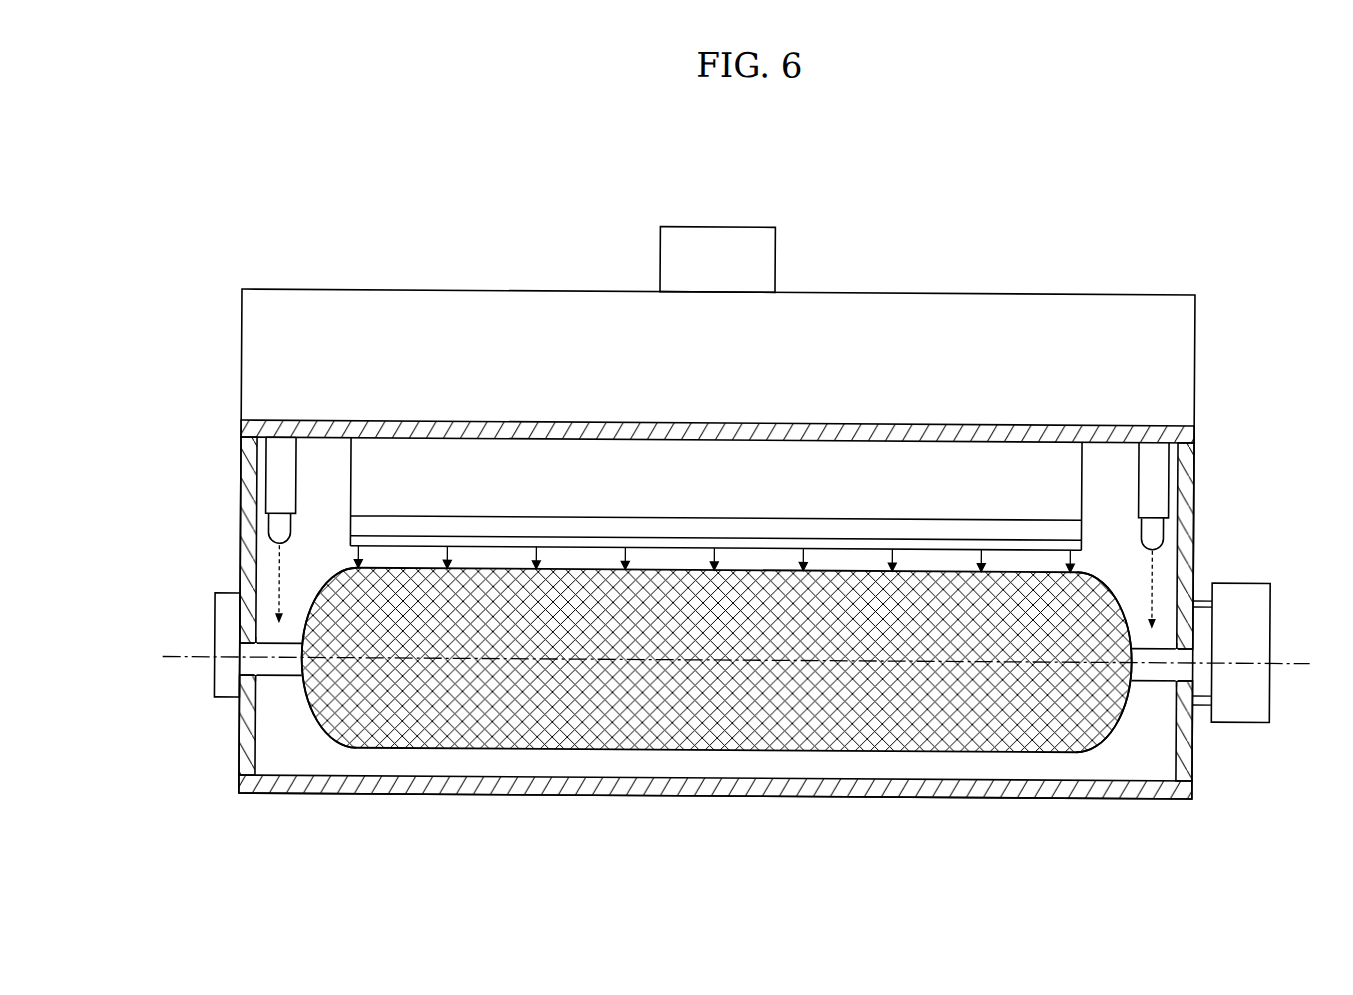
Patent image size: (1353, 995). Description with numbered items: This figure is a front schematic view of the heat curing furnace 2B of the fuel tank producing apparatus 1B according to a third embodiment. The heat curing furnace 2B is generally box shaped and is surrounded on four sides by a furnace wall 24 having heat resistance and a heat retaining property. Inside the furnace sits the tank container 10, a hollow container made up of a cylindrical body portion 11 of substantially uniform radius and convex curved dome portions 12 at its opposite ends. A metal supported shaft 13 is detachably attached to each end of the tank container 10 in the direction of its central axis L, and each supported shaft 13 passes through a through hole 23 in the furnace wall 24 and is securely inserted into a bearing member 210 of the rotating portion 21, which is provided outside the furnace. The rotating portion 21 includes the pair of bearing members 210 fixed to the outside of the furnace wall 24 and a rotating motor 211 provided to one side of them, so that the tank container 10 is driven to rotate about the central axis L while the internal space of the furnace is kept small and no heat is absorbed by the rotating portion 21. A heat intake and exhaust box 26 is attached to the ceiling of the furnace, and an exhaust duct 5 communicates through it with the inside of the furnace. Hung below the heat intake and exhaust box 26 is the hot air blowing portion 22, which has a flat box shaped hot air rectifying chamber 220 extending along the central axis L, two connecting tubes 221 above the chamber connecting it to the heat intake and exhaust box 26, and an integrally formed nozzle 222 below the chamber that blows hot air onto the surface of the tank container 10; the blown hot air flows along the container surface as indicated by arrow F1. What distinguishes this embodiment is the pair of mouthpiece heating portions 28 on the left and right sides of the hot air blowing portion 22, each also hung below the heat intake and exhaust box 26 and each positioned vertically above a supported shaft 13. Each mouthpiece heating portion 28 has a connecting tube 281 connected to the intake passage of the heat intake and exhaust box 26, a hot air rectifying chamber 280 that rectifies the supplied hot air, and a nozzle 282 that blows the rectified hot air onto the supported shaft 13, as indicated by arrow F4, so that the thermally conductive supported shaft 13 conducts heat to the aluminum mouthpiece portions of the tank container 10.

The fuel tank producing apparatus 1B is at (1214, 208).
The heat curing furnace 2B is at (1201, 347).
The exhaust duct 5 is at (733, 249).
The tank container 10 is at (921, 758).
The body portion 11 is at (725, 749).
The dome portion 12 is at (316, 714).
The supported shaft 13 is at (290, 668).
The rotating portion 21 is at (1279, 585).
The bearing member 210 is at (228, 610).
The rotating motor 211 is at (1258, 691).
The hot air blowing portion 22 is at (1093, 453).
The hot air rectifying chamber 220 is at (645, 484).
The connecting tube 221 is at (517, 418).
The nozzle 222 is at (425, 527).
The through hole 23 is at (265, 648).
The furnace wall 24 is at (240, 540).
The heat intake and exhaust box 26 is at (236, 353).
The mouthpiece heating portion 28 is at (165, 385).
The hot air rectifying chamber 280 is at (280, 478).
The connecting tube 281 is at (278, 419).
The nozzle 282 is at (268, 530).
The arrow F1 is at (986, 556).
The air flow direction F4 is at (290, 574).
The central axis L is at (750, 663).